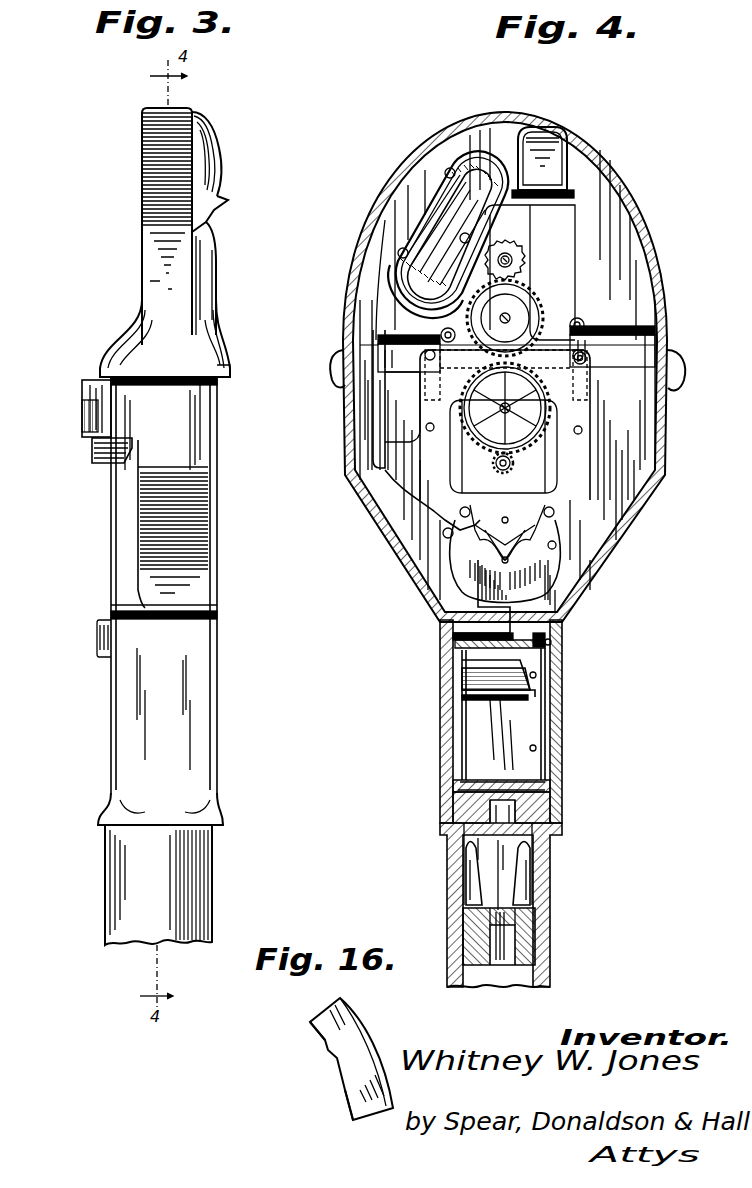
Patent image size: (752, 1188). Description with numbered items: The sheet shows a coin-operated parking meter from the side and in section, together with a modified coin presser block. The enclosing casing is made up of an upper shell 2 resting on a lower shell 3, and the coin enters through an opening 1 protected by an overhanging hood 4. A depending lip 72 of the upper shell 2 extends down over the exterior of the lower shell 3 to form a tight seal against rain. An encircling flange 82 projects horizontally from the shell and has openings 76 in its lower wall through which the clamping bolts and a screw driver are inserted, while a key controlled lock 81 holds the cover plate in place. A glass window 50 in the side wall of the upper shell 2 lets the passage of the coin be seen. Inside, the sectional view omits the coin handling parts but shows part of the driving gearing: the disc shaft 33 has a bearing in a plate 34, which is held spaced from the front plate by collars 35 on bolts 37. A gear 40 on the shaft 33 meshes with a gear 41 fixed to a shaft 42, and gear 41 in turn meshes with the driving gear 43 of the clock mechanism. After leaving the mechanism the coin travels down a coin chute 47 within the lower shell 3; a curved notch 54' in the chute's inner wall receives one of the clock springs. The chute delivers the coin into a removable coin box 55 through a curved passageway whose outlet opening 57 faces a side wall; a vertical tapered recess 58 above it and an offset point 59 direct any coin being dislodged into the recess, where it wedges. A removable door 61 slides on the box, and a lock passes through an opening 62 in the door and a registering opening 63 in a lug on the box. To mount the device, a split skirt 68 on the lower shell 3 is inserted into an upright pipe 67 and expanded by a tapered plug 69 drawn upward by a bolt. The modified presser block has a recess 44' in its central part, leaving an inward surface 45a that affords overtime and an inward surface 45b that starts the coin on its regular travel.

In FIG. 3, the opening 1 is at (219, 259).
In FIG. 4, the opening 1 is at (548, 143).
In FIG. 3, the upper shell 2 is at (152, 223).
In FIG. 4, the upper shell 2 is at (618, 172).
In FIG. 3, the lower shell 3 is at (195, 434).
In FIG. 4, the lower shell 3 is at (660, 437).
In FIG. 3, the overhanging hood 4 is at (215, 153).
In FIG. 4, the shaft 33 is at (515, 257).
In FIG. 4, the plate 34 is at (588, 358).
In FIG. 4, the collars 35 is at (432, 352).
In FIG. 4, the bolts 37 is at (442, 333).
In FIG. 4, the gear 40 is at (522, 265).
In FIG. 4, the gear 41 is at (528, 312).
In FIG. 4, the shaft 42 is at (505, 318).
In FIG. 4, the driving gear 43 is at (540, 447).
In FIG. 4, the coin chute 47 is at (388, 504).
In FIG. 4, the glass window 50 is at (438, 213).
In FIG. 4, the curved notch 54' is at (370, 405).
In FIG. 4, the removable coin box 55 is at (525, 730).
In FIG. 4, the opening 57 is at (498, 690).
In FIG. 4, the vertical tapered recess 58 is at (460, 675).
In FIG. 4, the point 59 is at (486, 690).
In FIG. 4, the removable door 61 is at (545, 708).
In FIG. 4, the opening 62 is at (550, 636).
In FIG. 4, the registering opening 63 is at (538, 633).
In FIG. 3, the upright pipe 67 is at (212, 872).
In FIG. 4, the upright pipe 67 is at (447, 890).
In FIG. 4, the split skirt 68 is at (545, 880).
In FIG. 4, the tapered plug 69 is at (535, 933).
In FIG. 3, the depending lip 72 is at (226, 380).
In FIG. 4, the depending lip 72 is at (682, 388).
In FIG. 3, the openings 76 is at (124, 463).
In FIG. 3, the key controlled lock 81 is at (96, 446).
In FIG. 3, the encircling flange 82 is at (98, 392).
In FIG. 16, the recess 44' is at (321, 1059).
In FIG. 16, the inward surface 45a is at (322, 1032).
In FIG. 16, the inward surface 45b is at (350, 1110).